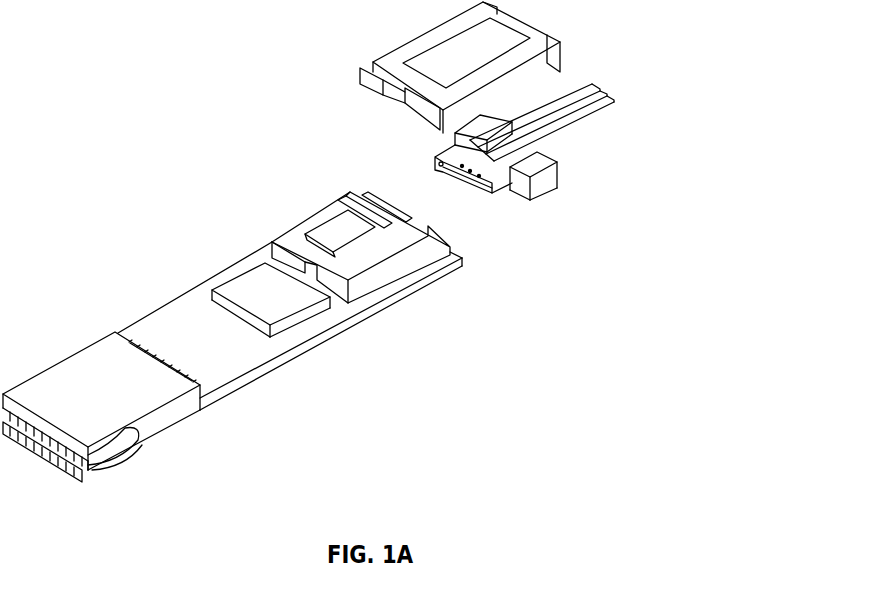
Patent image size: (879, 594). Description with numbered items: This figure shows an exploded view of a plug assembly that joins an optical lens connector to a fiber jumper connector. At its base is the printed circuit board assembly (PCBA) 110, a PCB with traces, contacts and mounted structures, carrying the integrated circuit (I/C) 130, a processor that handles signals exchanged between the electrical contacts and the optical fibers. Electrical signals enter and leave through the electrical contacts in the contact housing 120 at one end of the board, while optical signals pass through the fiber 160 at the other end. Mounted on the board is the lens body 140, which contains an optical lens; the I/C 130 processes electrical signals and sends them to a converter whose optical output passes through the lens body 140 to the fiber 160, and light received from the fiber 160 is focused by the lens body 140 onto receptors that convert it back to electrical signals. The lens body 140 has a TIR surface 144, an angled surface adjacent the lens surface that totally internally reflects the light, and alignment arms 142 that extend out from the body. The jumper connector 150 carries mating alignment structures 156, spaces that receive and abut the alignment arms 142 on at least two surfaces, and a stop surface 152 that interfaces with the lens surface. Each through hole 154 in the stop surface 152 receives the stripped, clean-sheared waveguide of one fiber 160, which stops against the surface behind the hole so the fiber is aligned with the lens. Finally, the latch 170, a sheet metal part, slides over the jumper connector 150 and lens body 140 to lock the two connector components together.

The printed circuit board assembly (PCBA) 110 is at (189, 326).
The contact housing 120 is at (180, 421).
The integrated circuit (I/C) 130 is at (288, 313).
The lens body 140 is at (331, 243).
The alignment arms 142 is at (355, 148).
The TIR surface 144 is at (340, 224).
The jumper connector 150 is at (464, 188).
The stop surface 152 is at (496, 183).
The through hole 154 is at (436, 151).
The alignment structures 156 is at (479, 194).
The fiber 160 is at (570, 125).
The latch 170 is at (389, 46).